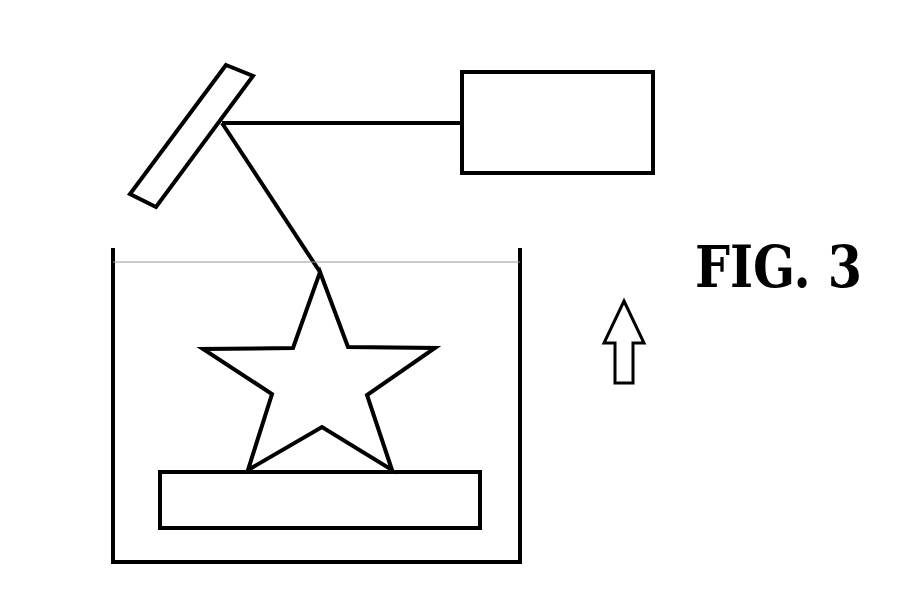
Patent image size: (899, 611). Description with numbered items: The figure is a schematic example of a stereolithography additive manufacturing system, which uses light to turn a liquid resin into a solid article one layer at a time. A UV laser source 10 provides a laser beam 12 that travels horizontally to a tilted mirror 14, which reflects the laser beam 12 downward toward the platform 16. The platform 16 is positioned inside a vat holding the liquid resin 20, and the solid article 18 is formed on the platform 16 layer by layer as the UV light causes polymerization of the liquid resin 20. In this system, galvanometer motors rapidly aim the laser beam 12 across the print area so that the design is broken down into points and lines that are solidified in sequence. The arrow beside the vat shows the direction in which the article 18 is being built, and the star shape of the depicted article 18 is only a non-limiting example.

The UV laser source 10 is at (653, 123).
The laser beam 12 is at (367, 123).
The mirror 14 is at (148, 164).
The platform 16 is at (480, 503).
The solid article 18 is at (297, 338).
The liquid resin 20 is at (483, 430).